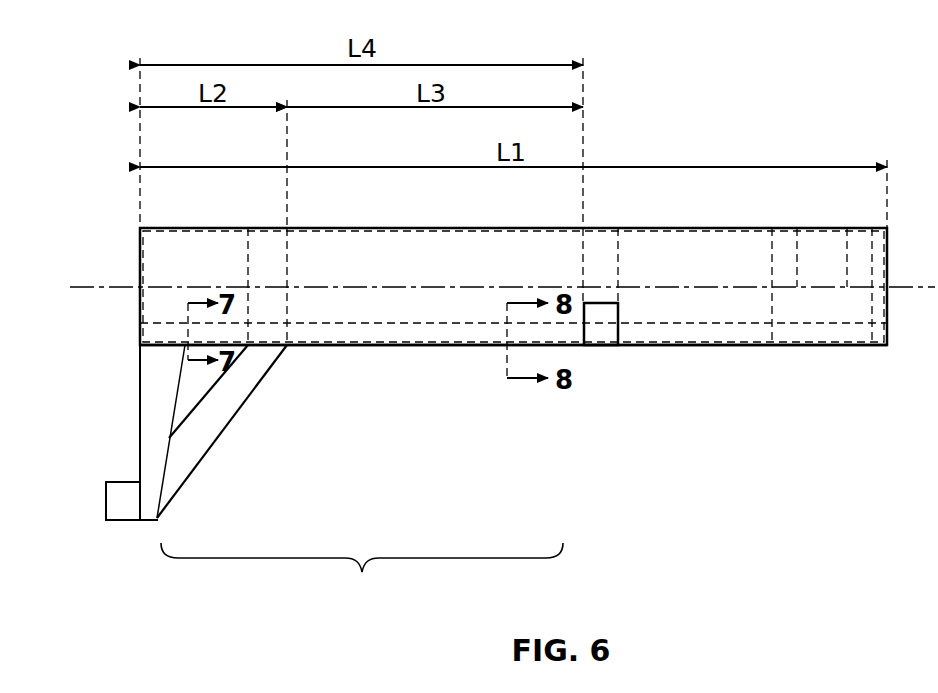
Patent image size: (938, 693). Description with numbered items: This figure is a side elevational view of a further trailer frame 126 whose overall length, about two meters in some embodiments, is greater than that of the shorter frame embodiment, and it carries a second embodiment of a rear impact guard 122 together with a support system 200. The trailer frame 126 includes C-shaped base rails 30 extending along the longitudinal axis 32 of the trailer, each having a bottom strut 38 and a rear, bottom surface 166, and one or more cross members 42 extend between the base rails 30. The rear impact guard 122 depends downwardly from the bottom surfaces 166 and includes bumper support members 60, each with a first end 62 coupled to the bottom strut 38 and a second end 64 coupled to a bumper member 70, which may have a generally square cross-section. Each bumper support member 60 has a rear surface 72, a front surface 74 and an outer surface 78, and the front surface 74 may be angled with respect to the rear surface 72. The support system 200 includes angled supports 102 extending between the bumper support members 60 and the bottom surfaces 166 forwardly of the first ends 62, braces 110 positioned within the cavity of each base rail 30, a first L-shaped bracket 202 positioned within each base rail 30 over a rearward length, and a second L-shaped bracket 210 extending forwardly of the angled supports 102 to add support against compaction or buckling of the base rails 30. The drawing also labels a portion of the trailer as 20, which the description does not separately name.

The boom 20 is at (643, 335).
The C-shaped base rail 30 is at (425, 307).
The longitudinal axis 32 is at (83, 287).
The bottom strut 38 is at (468, 347).
The cross member 42 is at (598, 332).
The bumper support member 60 is at (143, 370).
The first end 62 is at (143, 352).
The second end 64 is at (158, 520).
The bumper member 70 is at (113, 512).
The rear surface 72 is at (163, 470).
The front surface 74 is at (143, 408).
The outer surface 78 is at (150, 453).
The angled support 102 is at (208, 440).
The brace 110 is at (278, 270).
The rear impact guard 122 is at (362, 576).
The trailer frame 126 is at (697, 215).
The bottom surface 166 is at (358, 347).
The support system 200 is at (285, 357).
The first L-shaped bracket 202 is at (163, 323).
The second L-shaped bracket 210 is at (373, 340).